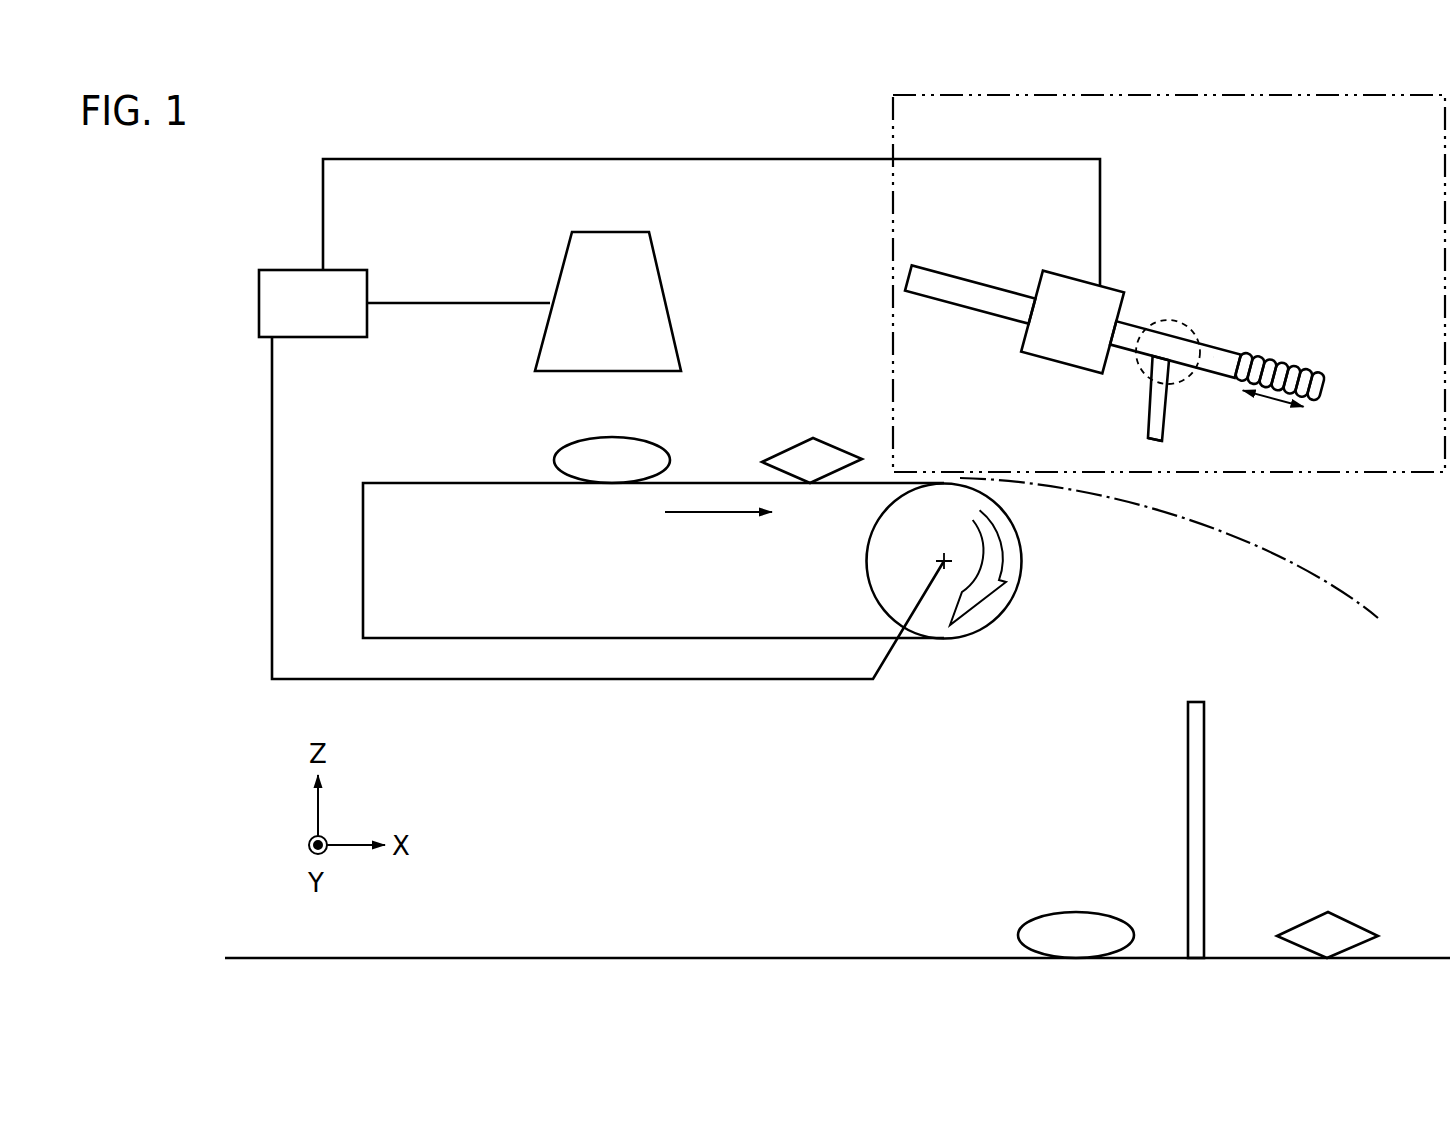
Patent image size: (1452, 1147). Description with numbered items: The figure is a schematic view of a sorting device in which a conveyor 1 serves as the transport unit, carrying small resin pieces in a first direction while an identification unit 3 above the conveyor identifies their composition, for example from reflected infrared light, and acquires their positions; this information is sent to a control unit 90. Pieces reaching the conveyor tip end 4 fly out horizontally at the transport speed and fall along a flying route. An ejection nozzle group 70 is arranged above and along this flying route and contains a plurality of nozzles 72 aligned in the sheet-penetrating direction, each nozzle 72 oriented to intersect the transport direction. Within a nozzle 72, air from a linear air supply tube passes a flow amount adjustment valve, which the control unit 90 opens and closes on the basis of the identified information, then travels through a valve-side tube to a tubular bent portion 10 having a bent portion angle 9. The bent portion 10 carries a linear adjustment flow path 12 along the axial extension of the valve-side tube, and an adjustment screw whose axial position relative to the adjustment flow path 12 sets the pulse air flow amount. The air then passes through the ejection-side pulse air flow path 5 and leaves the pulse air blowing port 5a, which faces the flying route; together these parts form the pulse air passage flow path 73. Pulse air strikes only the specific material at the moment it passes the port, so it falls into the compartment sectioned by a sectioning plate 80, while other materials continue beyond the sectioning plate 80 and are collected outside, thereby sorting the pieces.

The conveyor 1 is at (418, 482).
The identification unit 3 is at (608, 248).
The conveyor tip end 4 is at (943, 485).
The ejection-side pulse air flow path 5 is at (1167, 405).
The pulse air blowing port 5a is at (1156, 441).
The bent portion angle 9 is at (1147, 380).
The bent portion 10 is at (1182, 327).
The adjustment flow path 12 is at (1213, 357).
The ejection nozzle group 70 is at (890, 252).
The nozzles 72 is at (1094, 369).
The pulse air passage flow path 73 is at (1127, 323).
The sectioning plate 80 is at (1195, 702).
The control unit 90 is at (305, 290).